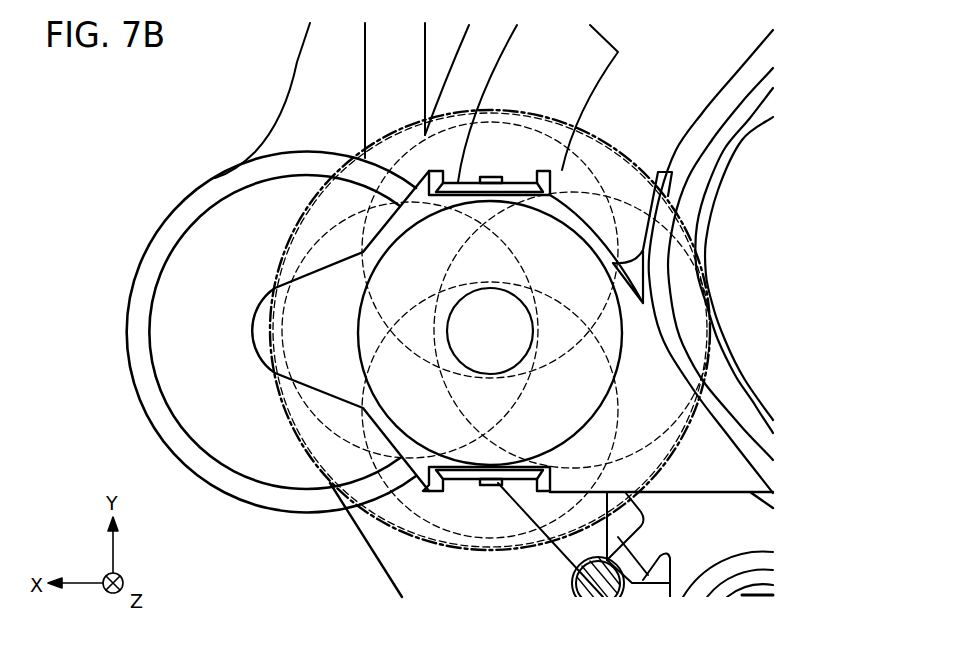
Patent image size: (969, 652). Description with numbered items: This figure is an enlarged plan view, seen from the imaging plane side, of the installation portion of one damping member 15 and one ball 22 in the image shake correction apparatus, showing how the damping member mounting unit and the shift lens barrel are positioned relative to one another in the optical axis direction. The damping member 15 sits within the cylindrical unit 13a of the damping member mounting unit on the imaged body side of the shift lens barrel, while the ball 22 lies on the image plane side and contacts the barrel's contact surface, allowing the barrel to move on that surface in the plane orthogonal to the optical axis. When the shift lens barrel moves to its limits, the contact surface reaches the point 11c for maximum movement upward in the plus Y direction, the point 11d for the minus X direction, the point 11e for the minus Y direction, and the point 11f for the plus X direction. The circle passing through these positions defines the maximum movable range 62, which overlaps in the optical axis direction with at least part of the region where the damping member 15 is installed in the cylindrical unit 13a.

The cylindrical unit 13a is at (128, 315).
The damping member 15 is at (235, 223).
The ball 22 is at (485, 347).
The maximum movable range 62 is at (645, 175).
The point of maximum movement toward the plus Y side 11c is at (608, 183).
The point of maximum movement toward the plus X side 11f is at (640, 205).
The point of maximum movement toward the minus X side 11d is at (298, 432).
The point of maximum movement toward the minus Y side 11e is at (362, 445).